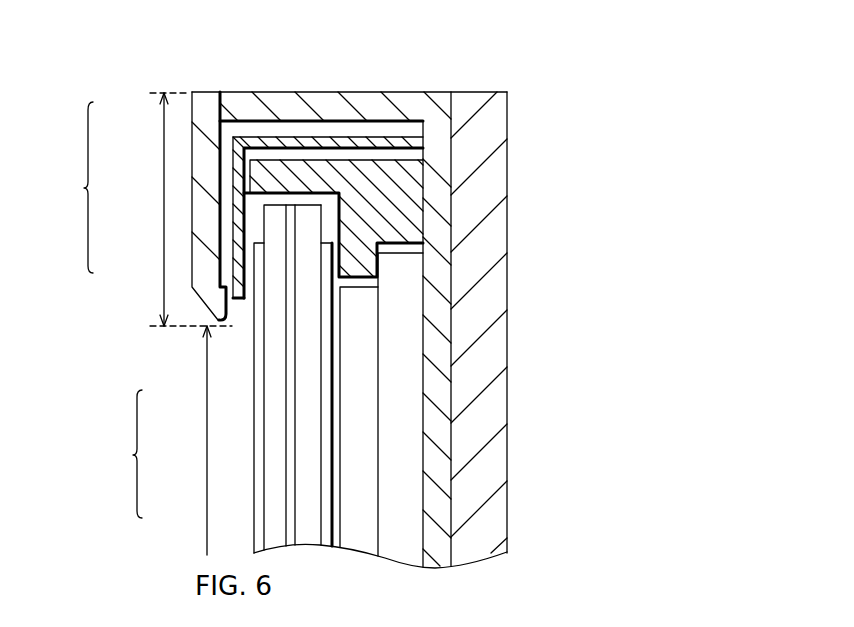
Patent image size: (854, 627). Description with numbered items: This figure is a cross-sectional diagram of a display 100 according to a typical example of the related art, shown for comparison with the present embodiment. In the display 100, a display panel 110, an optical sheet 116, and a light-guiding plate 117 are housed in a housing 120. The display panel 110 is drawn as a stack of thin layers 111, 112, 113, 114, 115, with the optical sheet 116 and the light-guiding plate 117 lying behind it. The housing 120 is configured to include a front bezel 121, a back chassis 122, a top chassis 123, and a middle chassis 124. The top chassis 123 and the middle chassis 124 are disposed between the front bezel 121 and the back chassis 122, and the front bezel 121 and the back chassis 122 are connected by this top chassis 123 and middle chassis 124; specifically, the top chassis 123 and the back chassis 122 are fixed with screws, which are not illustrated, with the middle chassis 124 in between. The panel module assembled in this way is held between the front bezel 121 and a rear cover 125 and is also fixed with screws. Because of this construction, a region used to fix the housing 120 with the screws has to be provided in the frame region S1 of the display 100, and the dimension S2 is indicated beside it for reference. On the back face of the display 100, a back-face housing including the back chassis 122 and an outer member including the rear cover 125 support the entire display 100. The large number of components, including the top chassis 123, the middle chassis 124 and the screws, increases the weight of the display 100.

The display 100 is at (480, 63).
The display panel 110 is at (115, 454).
The first layer 111 is at (325, 508).
The second layer 112 is at (307, 483).
The third layer 113 is at (293, 455).
The fourth layer 114 is at (278, 428).
The fifth layer 115 is at (258, 400).
The optical sheet 116 is at (367, 455).
The light-guiding plate 117 is at (403, 410).
The housing 120 is at (68, 187).
The front bezel 121 is at (207, 228).
The back chassis 122 is at (218, 117).
The top chassis 123 is at (224, 268).
The middle chassis 124 is at (236, 185).
The rear cover 125 is at (498, 180).
The frame region S1 is at (160, 297).
The second distance S2 is at (207, 355).